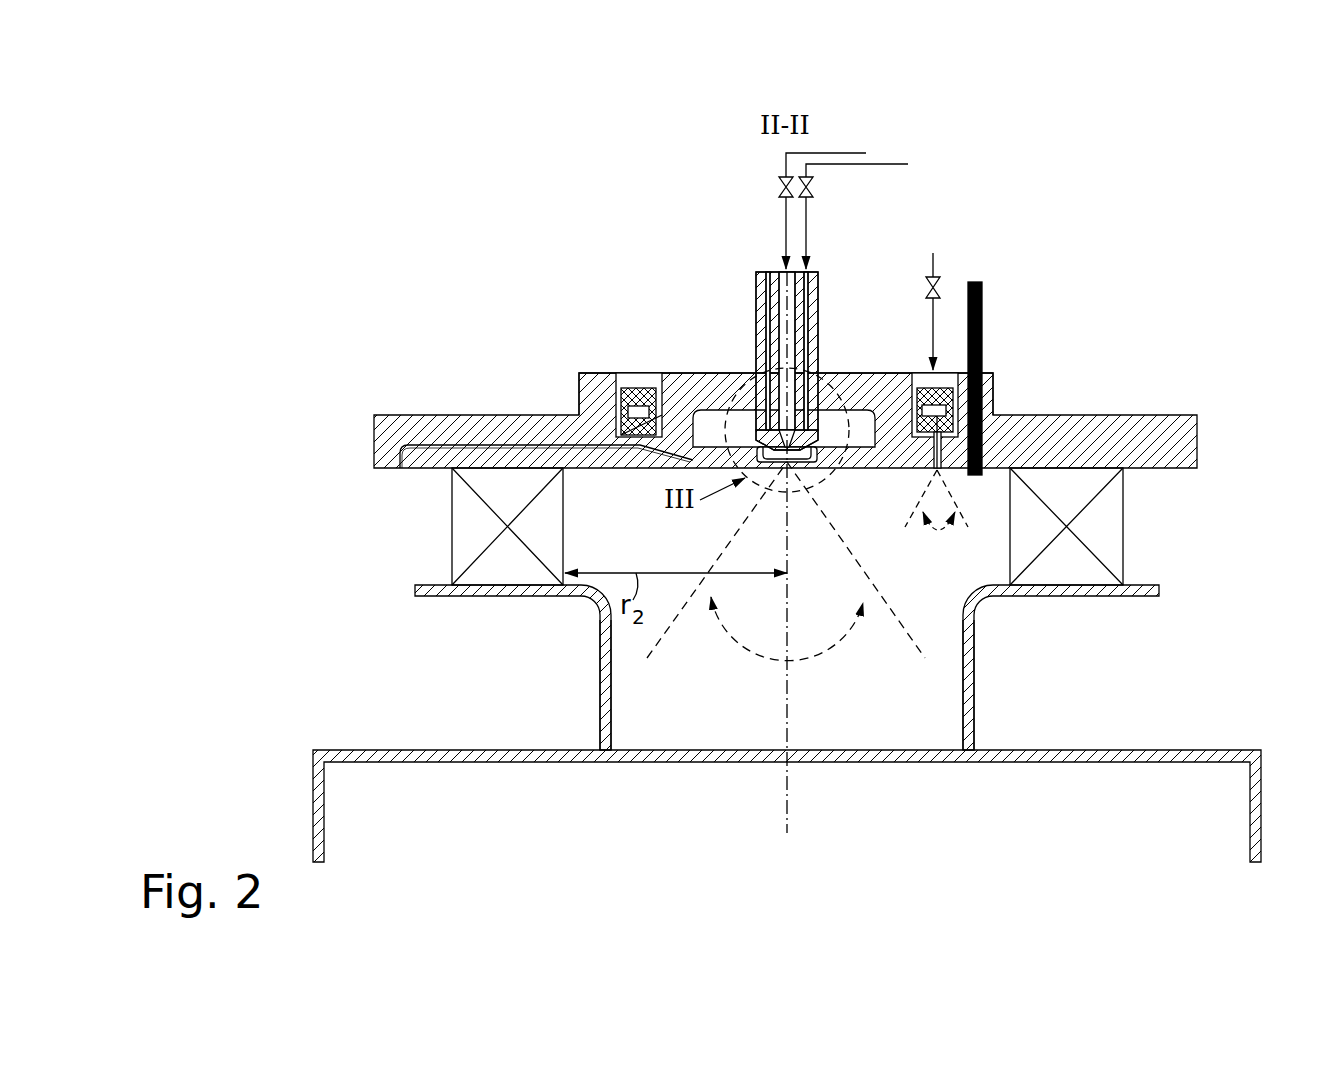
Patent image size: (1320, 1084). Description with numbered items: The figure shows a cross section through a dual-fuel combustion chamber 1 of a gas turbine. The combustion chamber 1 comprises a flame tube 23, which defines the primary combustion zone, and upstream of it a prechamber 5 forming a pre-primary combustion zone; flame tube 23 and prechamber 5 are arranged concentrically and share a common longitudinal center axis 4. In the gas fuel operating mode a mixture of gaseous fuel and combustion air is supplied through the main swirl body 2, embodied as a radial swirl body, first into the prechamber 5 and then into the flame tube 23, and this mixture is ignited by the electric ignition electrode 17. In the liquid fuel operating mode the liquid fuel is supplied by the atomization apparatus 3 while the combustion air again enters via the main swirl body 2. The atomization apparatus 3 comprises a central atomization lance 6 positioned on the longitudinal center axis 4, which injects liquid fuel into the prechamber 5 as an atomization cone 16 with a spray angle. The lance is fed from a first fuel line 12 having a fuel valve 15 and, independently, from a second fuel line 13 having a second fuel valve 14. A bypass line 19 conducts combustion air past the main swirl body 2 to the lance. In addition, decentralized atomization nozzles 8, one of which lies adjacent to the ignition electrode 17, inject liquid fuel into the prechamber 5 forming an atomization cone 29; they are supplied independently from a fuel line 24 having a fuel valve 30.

The combustion chamber 1 is at (452, 306).
The main swirl body 2 is at (451, 540).
The atomization apparatus 3 is at (577, 371).
The longitudinal center axis 4 is at (786, 809).
The prechamber 5 is at (600, 697).
The central atomization lance 6 is at (752, 326).
The decentralized atomization nozzles 8 is at (952, 478).
The first fuel line 12 is at (913, 162).
The second fuel line 13 is at (848, 150).
The second fuel valve 14 is at (775, 188).
The fuel valve 15 is at (818, 188).
The atomization cone 16 is at (926, 641).
The ignition electrode 17 is at (984, 337).
The bypass line 19 is at (437, 440).
The flame tube 23 is at (324, 804).
The fuel line 24 is at (940, 262).
The atomization cone 29 is at (1100, 589).
The fuel valve 30 is at (944, 290).